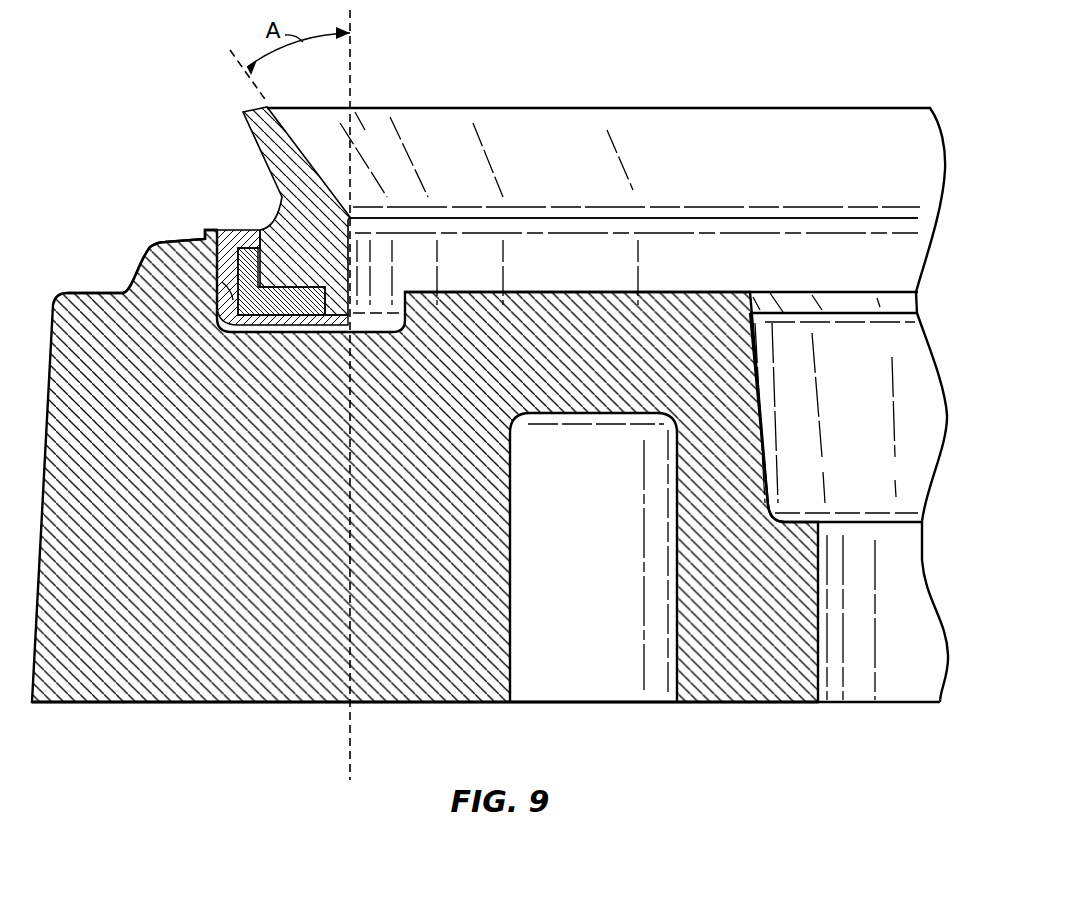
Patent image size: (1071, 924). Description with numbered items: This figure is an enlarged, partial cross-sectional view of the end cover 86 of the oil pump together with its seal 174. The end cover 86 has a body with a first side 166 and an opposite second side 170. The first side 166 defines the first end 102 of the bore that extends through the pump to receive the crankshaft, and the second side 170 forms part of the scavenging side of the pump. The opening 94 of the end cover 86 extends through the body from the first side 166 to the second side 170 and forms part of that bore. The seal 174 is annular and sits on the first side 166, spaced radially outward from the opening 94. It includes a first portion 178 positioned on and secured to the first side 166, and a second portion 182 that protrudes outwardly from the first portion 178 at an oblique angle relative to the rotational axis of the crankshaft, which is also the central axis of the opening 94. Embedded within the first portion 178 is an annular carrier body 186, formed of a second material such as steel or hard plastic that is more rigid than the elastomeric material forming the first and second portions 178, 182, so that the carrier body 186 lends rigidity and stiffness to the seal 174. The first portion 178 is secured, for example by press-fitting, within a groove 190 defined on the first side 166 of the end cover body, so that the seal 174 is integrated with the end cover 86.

The end cover 86 is at (147, 104).
The second side 170 is at (265, 705).
The first end 102 is at (135, 273).
The first side 166 is at (172, 243).
The seal 174 is at (733, 162).
The second portion 182 is at (545, 152).
The opening 94 is at (840, 358).
The first portion 178 is at (297, 255).
The groove 190 is at (220, 311).
The carrier body 186 is at (231, 333).